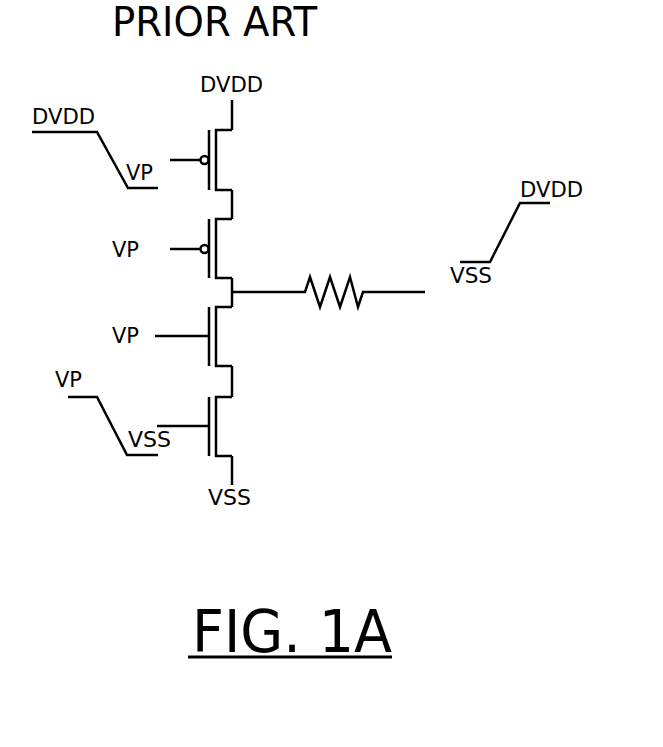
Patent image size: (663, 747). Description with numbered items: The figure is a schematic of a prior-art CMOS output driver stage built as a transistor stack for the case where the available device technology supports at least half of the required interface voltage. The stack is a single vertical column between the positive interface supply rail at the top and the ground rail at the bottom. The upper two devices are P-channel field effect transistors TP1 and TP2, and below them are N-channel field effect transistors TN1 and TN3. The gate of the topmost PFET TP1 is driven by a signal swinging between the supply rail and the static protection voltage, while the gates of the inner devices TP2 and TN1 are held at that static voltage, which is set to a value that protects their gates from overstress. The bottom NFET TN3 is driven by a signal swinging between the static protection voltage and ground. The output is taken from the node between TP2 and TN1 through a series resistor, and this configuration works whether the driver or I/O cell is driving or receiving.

The P-channel field effect transistor TP1 is at (217, 160).
The P-channel field effect transistor TP2 is at (217, 248).
The N-channel field effect transistor TN1 is at (210, 336).
The third NMOS transistor TN3 is at (212, 426).